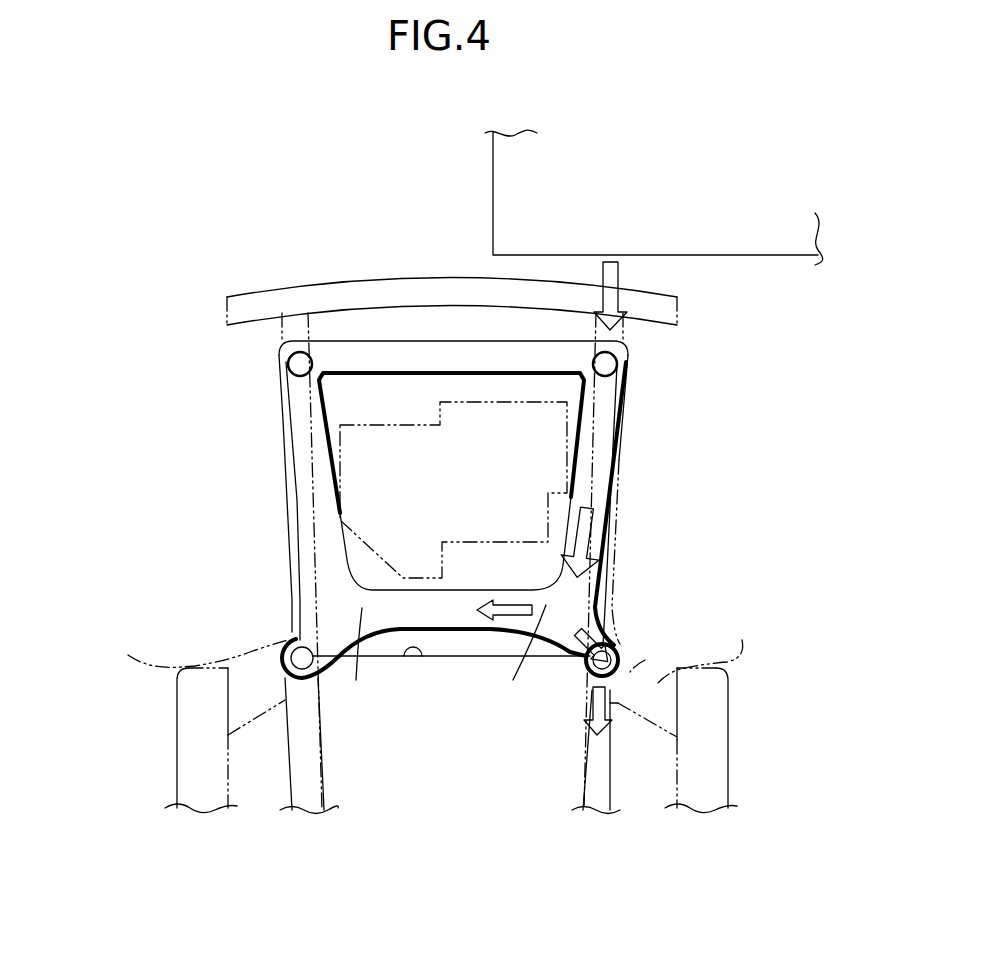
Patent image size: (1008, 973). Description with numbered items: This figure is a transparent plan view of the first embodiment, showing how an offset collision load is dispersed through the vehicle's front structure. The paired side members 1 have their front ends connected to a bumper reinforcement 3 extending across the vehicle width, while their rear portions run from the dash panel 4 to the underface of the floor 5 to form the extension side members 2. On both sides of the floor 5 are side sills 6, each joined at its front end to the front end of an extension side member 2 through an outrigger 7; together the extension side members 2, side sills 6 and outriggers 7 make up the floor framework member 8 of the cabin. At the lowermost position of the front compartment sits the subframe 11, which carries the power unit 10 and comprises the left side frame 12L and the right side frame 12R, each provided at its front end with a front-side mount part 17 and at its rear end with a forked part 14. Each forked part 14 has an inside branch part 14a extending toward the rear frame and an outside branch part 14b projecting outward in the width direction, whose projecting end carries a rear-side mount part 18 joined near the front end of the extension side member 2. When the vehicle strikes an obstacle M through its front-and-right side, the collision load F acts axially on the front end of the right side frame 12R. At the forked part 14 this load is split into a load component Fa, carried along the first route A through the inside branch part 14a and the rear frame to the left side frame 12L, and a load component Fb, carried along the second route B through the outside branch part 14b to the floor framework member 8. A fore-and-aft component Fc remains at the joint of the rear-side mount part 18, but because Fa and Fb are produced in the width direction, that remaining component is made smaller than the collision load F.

The obstacle M is at (490, 149).
The collision load F is at (618, 294).
The bumper reinforcement 3 is at (376, 280).
The extension side member 2 is at (325, 763).
The side member 1 is at (290, 540).
The left side frame 12L is at (303, 500).
The right side frame 12R is at (592, 496).
The subframe 11 is at (278, 422).
The power unit 10 is at (567, 410).
The front-side mount part 17 is at (288, 365).
The forked part 14 is at (331, 603).
The inside branch part 14a is at (444, 704).
The outside branch part 14b is at (278, 640).
The rear-side mount part 18 is at (284, 683).
The dash panel 4 is at (419, 661).
The floor 5 is at (437, 790).
The outrigger 7 is at (430, 644).
The floor framework member 8 is at (178, 730).
The side sill 6 is at (178, 773).
The first route A is at (496, 611).
The second route B is at (596, 609).
The load component Fa is at (507, 632).
The load component Fb is at (580, 660).
The force Fc is at (610, 720).